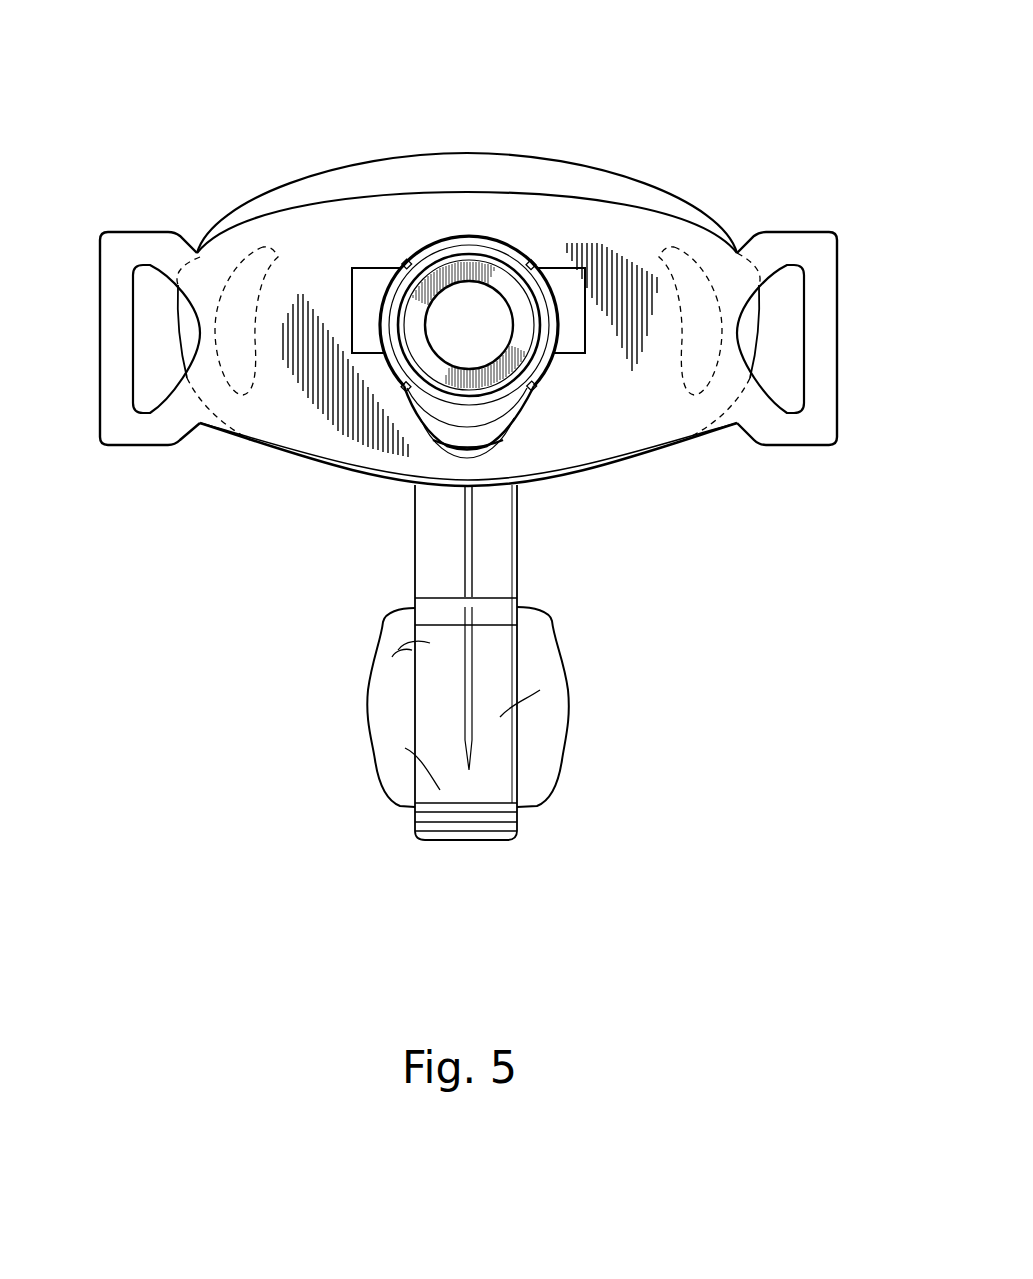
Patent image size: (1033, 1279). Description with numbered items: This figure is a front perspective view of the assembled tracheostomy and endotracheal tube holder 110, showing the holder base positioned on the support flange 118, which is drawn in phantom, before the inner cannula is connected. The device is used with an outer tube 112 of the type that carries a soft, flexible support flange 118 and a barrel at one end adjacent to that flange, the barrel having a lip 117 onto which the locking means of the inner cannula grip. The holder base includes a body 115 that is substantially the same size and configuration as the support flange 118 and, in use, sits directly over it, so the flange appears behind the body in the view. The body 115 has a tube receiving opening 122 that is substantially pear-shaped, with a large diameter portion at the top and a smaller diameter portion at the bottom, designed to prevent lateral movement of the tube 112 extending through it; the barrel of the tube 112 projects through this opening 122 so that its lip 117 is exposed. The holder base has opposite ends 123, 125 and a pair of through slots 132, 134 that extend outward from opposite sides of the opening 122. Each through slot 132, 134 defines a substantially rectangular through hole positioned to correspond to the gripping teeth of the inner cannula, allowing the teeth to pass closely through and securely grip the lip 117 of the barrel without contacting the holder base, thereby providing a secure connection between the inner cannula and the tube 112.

The tracheostomy and endotracheal tube holder 110 is at (684, 128).
The outer tube 112 is at (488, 537).
The body 115 is at (326, 238).
The lip 117 is at (487, 250).
The support flange 118 is at (497, 170).
The tube receiving opening 122 is at (460, 430).
The end 123 is at (110, 287).
The end 125 is at (822, 293).
The through slot 132 is at (362, 310).
The through slot 134 is at (567, 300).